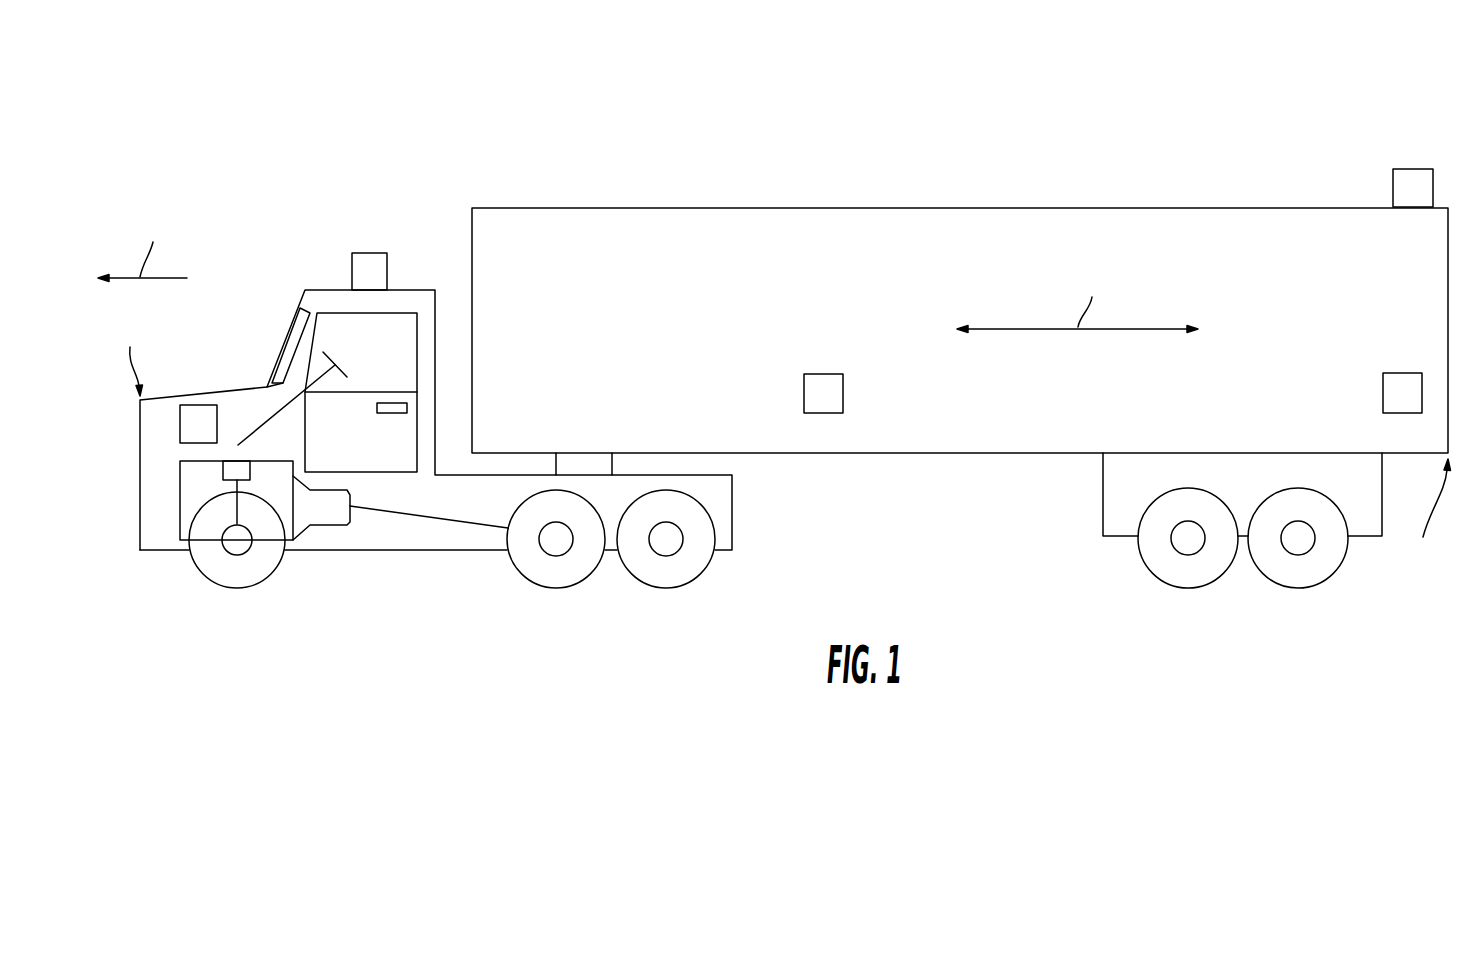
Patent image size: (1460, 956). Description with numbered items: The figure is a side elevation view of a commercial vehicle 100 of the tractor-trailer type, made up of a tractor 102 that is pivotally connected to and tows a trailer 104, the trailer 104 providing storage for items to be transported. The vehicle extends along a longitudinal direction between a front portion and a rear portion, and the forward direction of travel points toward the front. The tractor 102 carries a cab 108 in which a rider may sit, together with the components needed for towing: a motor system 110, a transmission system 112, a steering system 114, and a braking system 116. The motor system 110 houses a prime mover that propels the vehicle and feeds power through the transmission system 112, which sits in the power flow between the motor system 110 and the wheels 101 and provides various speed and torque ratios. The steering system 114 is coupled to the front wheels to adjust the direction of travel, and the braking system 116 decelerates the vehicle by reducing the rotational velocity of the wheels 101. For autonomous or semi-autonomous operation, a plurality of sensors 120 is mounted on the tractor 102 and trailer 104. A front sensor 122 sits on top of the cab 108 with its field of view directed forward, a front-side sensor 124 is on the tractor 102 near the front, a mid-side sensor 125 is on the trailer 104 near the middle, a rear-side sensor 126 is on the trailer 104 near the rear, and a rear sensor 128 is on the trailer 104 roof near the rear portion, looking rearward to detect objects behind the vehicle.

The commercial vehicle 100 is at (222, 160).
The wheels 101 is at (652, 563).
The tractor 102 is at (243, 379).
The trailer 104 is at (937, 208).
The cab 108 is at (402, 345).
The motor system 110 is at (188, 492).
The transmission system 112 is at (323, 510).
The steering system 114 is at (233, 472).
The braking system 116 is at (237, 547).
The sensors 120 is at (350, 268).
The front sensor 122 is at (373, 267).
The front-side sensor 124 is at (198, 420).
The mid-side sensor 125 is at (827, 388).
The rear-side sensor 126 is at (1407, 388).
The rear sensor 128 is at (1417, 187).